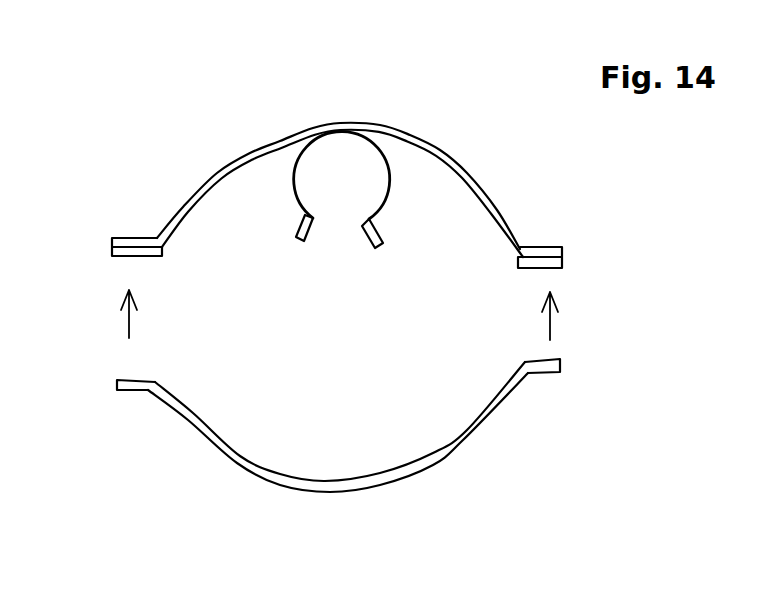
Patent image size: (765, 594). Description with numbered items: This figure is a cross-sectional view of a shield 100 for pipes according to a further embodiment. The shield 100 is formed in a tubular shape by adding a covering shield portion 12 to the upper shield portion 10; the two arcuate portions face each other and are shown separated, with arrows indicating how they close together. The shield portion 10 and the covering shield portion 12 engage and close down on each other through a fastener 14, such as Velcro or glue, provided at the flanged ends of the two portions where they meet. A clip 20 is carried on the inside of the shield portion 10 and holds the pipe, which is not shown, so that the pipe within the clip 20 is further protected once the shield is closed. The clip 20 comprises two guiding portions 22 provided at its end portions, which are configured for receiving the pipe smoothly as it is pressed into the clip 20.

The shield 100 is at (145, 59).
The shield portion 10 is at (237, 165).
The covering shield portion 12 is at (233, 457).
The fastener 14 is at (127, 255).
The clip 20 is at (392, 177).
The guiding portions 22 is at (302, 241).